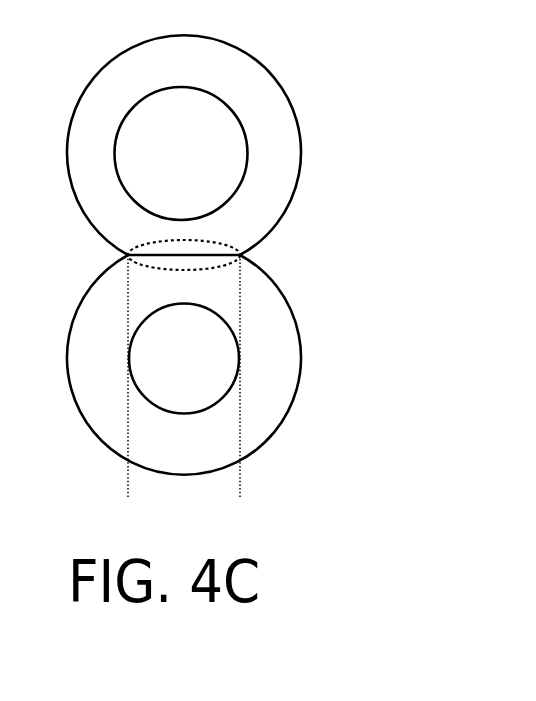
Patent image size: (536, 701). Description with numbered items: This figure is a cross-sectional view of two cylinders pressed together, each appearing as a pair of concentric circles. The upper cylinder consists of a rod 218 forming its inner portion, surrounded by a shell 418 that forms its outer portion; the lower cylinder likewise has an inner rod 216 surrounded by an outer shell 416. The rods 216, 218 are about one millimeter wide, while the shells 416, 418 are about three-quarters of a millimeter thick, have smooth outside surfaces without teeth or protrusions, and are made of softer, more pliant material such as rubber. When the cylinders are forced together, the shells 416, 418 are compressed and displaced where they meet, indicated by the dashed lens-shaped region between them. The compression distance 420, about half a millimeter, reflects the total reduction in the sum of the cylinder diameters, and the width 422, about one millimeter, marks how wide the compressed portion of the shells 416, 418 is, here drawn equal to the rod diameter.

The shell 418 is at (161, 73).
The rod 218 is at (161, 165).
The shell 416 is at (165, 458).
The rod 216 is at (163, 366).
The compression distance 420 is at (278, 243).
The width of compression 422 is at (240, 492).